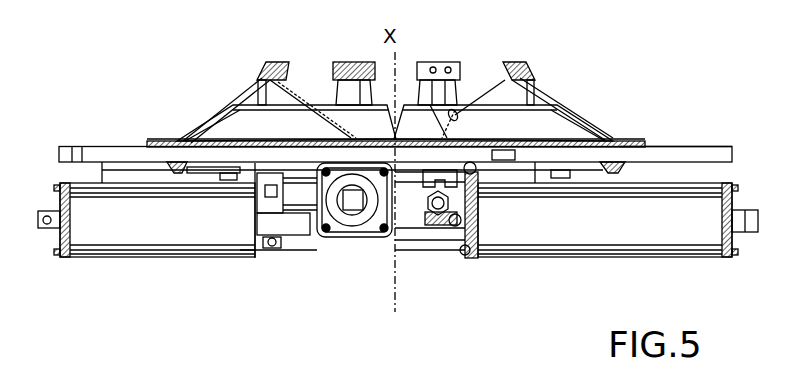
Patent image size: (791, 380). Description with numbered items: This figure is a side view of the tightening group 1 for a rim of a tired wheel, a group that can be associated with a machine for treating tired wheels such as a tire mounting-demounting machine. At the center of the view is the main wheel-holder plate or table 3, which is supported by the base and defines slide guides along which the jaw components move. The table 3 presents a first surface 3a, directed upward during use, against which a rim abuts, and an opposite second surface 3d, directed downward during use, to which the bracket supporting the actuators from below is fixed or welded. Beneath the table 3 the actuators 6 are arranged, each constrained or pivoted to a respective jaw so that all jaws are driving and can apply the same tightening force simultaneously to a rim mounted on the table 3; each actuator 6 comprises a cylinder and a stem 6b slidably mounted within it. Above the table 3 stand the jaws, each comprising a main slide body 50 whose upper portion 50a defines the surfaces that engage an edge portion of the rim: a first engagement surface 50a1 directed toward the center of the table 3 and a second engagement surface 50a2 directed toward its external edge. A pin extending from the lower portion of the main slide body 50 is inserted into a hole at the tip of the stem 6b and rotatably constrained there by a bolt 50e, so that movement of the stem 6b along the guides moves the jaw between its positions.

The tightening group 1 is at (118, 107).
The main wheel-holder plate or table 3 is at (713, 147).
The first surface 3a is at (669, 146).
The second surface 3d is at (103, 190).
The actuator 6 is at (163, 240).
The stem 6b is at (297, 225).
The main slide body 50 is at (258, 82).
The upper portion 50a is at (578, 118).
The first engagement surface 50a1 is at (297, 66).
The second engagement surface 50a2 is at (532, 70).
The bolt 50e is at (262, 236).